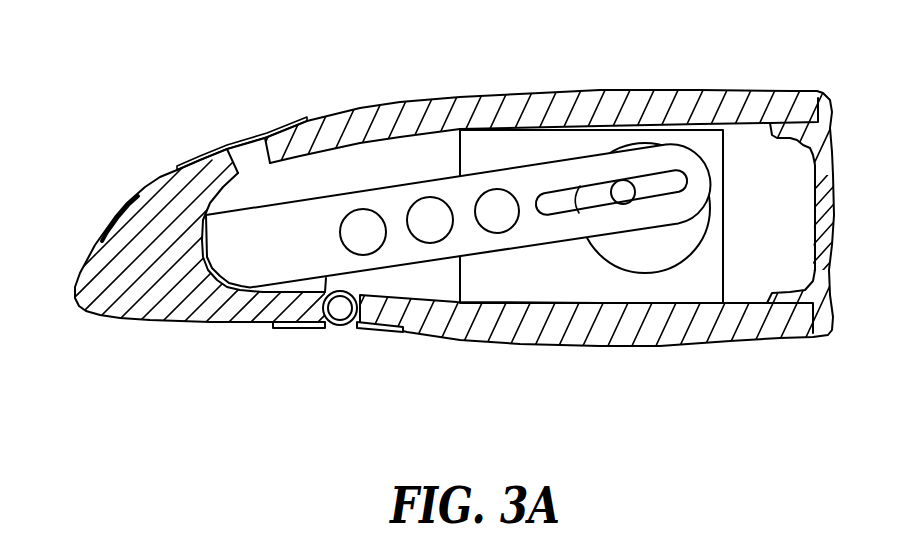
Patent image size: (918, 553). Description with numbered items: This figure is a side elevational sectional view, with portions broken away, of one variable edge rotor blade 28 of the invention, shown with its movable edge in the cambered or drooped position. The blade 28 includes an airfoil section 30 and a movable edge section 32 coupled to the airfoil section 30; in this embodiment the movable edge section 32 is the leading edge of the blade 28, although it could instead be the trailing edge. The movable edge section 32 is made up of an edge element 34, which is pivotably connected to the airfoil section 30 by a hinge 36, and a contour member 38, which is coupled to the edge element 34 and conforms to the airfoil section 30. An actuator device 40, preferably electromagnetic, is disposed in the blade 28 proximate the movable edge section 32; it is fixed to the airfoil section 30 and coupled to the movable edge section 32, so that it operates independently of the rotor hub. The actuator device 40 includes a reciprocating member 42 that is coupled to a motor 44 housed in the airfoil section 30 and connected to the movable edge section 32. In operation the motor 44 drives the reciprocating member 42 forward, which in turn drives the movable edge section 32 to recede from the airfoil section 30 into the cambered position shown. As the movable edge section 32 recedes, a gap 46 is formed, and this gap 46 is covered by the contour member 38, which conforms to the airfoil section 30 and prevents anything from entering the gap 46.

The variable edge rotor blade 28 is at (101, 47).
The airfoil section 30 is at (623, 68).
The movable edge section 32 is at (110, 186).
The edge element 34 is at (72, 280).
The hinge 36 is at (339, 326).
The contour member 38 is at (233, 146).
The actuator device 40 is at (516, 289).
The reciprocating member 42 is at (403, 248).
The motor 44 is at (690, 283).
The gap 46 is at (251, 158).